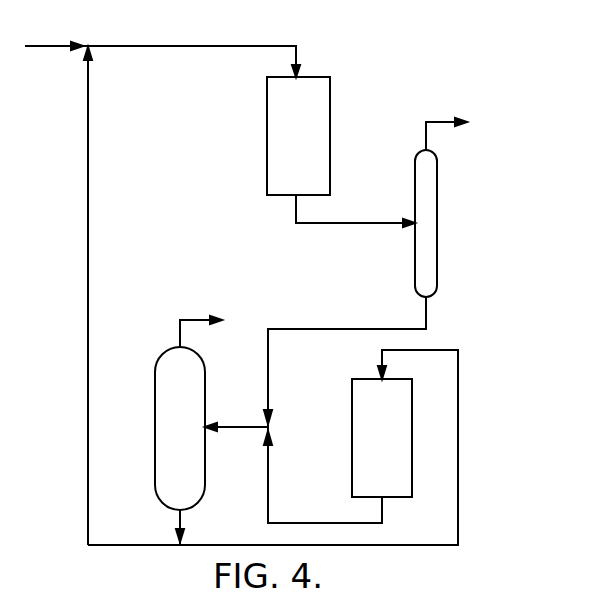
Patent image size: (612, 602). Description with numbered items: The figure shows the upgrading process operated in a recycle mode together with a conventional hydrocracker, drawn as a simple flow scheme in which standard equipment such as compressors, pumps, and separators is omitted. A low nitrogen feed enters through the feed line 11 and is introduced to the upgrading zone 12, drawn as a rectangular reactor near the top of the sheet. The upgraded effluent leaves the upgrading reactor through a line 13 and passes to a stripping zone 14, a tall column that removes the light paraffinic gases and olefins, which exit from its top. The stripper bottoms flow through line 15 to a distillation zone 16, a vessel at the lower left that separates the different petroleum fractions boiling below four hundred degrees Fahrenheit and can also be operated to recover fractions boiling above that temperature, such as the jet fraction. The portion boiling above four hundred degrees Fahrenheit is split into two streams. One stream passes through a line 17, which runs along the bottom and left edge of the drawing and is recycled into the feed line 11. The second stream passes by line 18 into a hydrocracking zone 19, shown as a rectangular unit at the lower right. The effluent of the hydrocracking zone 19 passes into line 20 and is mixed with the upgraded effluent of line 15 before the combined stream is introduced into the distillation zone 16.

The feed line 11 is at (33, 46).
The upgrading zone 12 is at (330, 90).
The line 13 is at (364, 223).
The stripping zone 14 is at (437, 163).
The line 15 is at (302, 329).
The distillation zone 16 is at (205, 370).
The line 17 is at (107, 545).
The line 18 is at (405, 545).
The hydrocracking zone 19 is at (405, 379).
The line 20 is at (268, 476).